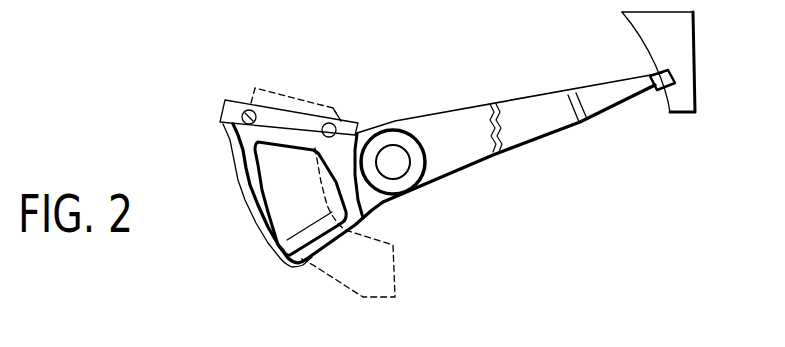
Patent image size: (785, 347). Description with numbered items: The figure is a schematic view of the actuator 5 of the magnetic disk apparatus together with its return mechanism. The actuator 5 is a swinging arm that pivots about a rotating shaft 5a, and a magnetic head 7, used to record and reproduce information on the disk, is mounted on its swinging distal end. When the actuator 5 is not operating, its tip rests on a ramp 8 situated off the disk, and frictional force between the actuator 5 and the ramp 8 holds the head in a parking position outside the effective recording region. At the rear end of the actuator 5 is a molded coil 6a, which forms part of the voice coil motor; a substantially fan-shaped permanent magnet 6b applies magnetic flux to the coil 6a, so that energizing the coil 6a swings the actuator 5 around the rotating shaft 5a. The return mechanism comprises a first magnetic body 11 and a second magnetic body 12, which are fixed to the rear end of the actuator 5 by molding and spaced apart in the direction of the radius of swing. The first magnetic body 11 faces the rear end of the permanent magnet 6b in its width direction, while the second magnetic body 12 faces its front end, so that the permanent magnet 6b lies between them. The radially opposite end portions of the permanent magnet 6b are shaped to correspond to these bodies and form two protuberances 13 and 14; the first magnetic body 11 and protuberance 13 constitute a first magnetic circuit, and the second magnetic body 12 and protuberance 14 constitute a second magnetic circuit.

The actuator 5 is at (532, 132).
The rotating shaft 5a is at (395, 160).
The molded coil 6a is at (283, 262).
The permanent magnet 6b is at (400, 280).
The magnetic head 7 is at (642, 97).
The ramp 8 is at (688, 27).
The first magnetic body 11 is at (223, 124).
The second magnetic body 12 is at (328, 123).
The protuberance 13 is at (255, 88).
The protuberance 14 is at (333, 108).